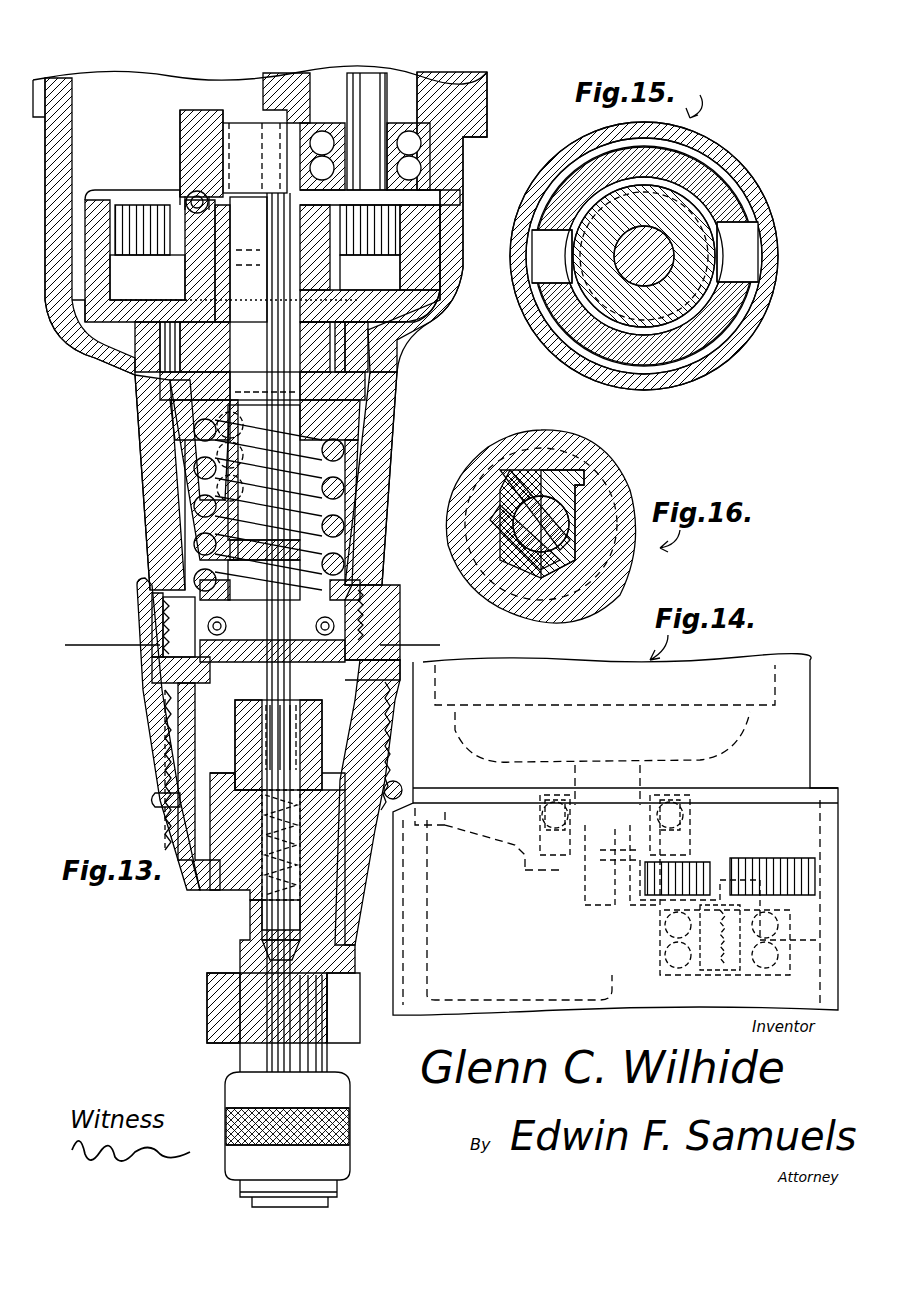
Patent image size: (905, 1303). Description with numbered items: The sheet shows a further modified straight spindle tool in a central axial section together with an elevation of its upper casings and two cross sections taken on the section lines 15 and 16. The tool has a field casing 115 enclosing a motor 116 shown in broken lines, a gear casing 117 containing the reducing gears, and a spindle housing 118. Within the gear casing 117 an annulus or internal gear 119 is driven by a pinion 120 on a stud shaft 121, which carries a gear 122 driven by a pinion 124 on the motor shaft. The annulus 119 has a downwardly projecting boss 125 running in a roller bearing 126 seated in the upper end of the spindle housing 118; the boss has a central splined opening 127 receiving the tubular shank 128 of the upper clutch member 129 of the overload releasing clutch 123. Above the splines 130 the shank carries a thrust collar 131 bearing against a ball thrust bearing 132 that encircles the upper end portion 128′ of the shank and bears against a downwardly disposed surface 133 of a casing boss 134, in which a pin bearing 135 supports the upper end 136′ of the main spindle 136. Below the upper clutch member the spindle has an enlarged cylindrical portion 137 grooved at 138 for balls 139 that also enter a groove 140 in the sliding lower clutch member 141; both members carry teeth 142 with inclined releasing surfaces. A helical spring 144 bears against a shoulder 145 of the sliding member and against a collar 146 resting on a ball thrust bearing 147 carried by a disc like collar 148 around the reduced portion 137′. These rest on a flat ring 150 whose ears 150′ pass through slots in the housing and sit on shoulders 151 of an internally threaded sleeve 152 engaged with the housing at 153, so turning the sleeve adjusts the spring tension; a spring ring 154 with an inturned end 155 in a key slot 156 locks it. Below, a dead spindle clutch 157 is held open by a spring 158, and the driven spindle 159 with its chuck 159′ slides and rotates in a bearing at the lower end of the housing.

In FIG. 13, the section line 15- 15 is at (436, 630).
In FIG. 13, the section line 16- 16 is at (358, 285).
In FIG. 14, the field casing 115 is at (795, 660).
In FIG. 14, the motor 116 is at (775, 680).
In FIG. 13, the gear casing 117 is at (470, 82).
In FIG. 14, the gear casing 117 is at (395, 922).
In FIG. 13, the spindle housing 118 is at (385, 470).
In FIG. 15, the spindle housing 118 is at (712, 178).
In FIG. 13, the annulus or internal gear 119 is at (420, 222).
In FIG. 16, the annulus or internal gear 119 is at (608, 490).
In FIG. 13, the pinion 120 is at (400, 200).
In FIG. 13, the stud shaft 121 is at (372, 80).
In FIG. 14, the gear 122 is at (720, 845).
In FIG. 13, the overload releasing clutch 123 is at (165, 400).
In FIG. 14, the pinion 124 is at (580, 892).
In FIG. 13, the boss 125 is at (180, 350).
In FIG. 16, the boss 125 is at (575, 480).
In FIG. 13, the roller bearing 126 is at (165, 350).
In FIG. 13, the splined opening 127 is at (280, 306).
In FIG. 16, the splined opening 127 is at (585, 548).
In FIG. 13, the tubular shank 128 is at (180, 300).
In FIG. 16, the tubular shank 128 is at (555, 470).
In FIG. 13, the upper end portion of the shank 128′ is at (228, 242).
In FIG. 13, the upper clutch member 129 is at (165, 380).
In FIG. 13, the splines 130 is at (160, 335).
In FIG. 16, the splines 130 is at (525, 475).
In FIG. 13, the thrust collar or abutment 131 is at (170, 190).
In FIG. 13, the ball thrust bearing 132 is at (195, 195).
In FIG. 13, the downwardly disposed surface 133 is at (200, 150).
In FIG. 13, the boss 134 is at (205, 118).
In FIG. 13, the pin bearing 135 is at (210, 120).
In FIG. 13, the main spindle 136 is at (285, 350).
In FIG. 13, the upper end of the spindle 136′ is at (250, 135).
In FIG. 13, the enlarged cylindrical portion 137 is at (230, 525).
In FIG. 13, the reduced portion 137′ is at (228, 570).
In FIG. 13, the groove 138 is at (238, 440).
In FIG. 13, the balls 139 is at (235, 420).
In FIG. 13, the groove 140 is at (195, 470).
In FIG. 13, the sliding or lower clutch member 141 is at (170, 420).
In FIG. 13, the teeth 142 is at (270, 388).
In FIG. 13, the helical spring 144 is at (190, 535).
In FIG. 13, the shoulder 145 is at (375, 408).
In FIG. 13, the collar 146 is at (340, 595).
In FIG. 13, the ball thrust bearing 147 is at (315, 625).
In FIG. 13, the disc-like collar 148 is at (320, 652).
In FIG. 15, the disc-like collar 148 is at (705, 252).
In FIG. 13, the flat ring 150 is at (400, 660).
In FIG. 15, the projecting ear 150′ is at (730, 232).
In FIG. 13, the shoulders 151 is at (380, 700).
In FIG. 13, the internally threaded sleeve 152 is at (390, 724).
In FIG. 15, the internally threaded sleeve 152 is at (712, 142).
In FIG. 13, the threaded engagement 153 is at (390, 752).
In FIG. 13, the spring ring 154 is at (155, 795).
In FIG. 13, the inturned end 155 is at (168, 812).
In FIG. 13, the key slot 156 is at (172, 712).
In FIG. 13, the dead spindle clutch 157 is at (225, 800).
In FIG. 13, the spring 158 is at (205, 902).
In FIG. 13, the driven spindle 159 is at (235, 932).
In FIG. 13, the chuck 159′ is at (340, 1080).